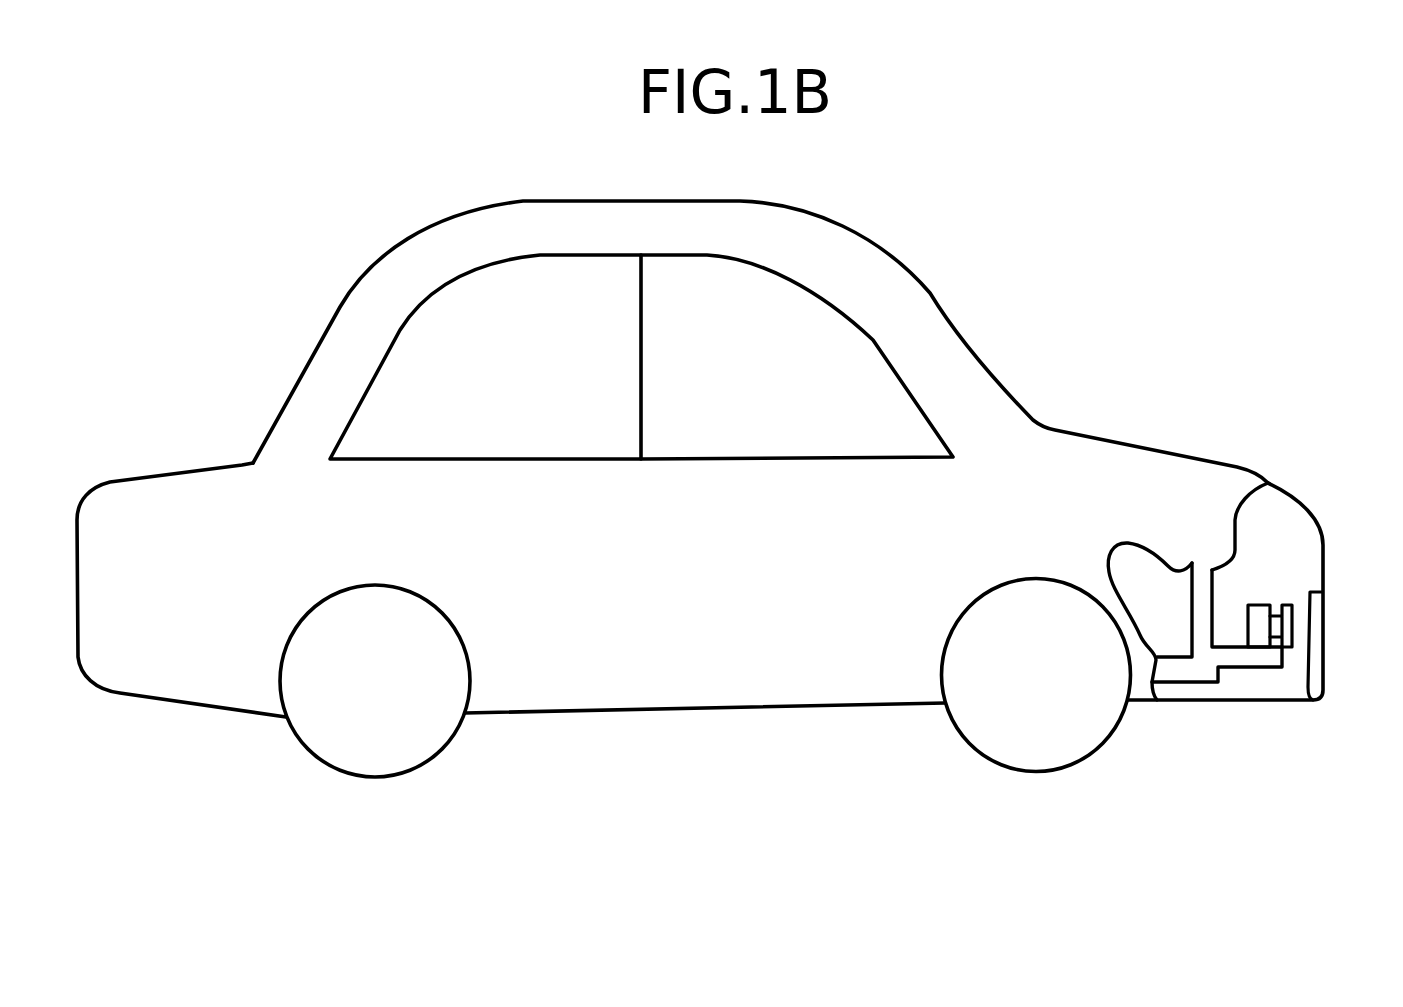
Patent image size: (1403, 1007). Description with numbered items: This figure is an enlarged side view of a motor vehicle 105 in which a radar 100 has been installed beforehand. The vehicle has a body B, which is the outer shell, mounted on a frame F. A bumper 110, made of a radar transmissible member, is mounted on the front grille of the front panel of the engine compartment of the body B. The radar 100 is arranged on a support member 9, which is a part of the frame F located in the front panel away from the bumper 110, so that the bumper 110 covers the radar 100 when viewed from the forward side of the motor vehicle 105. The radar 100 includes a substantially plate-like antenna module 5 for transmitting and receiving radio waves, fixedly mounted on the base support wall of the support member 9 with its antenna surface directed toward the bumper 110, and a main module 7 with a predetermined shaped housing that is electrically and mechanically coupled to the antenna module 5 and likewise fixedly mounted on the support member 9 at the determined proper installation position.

The motor vehicle 105 is at (1024, 276).
The body B is at (1207, 460).
The radar 100 is at (1205, 526).
The support member 9 is at (1190, 592).
The frame F is at (1210, 695).
The main module 7 is at (1259, 603).
The antenna module 5 is at (1287, 603).
The bumper 110 is at (1325, 630).